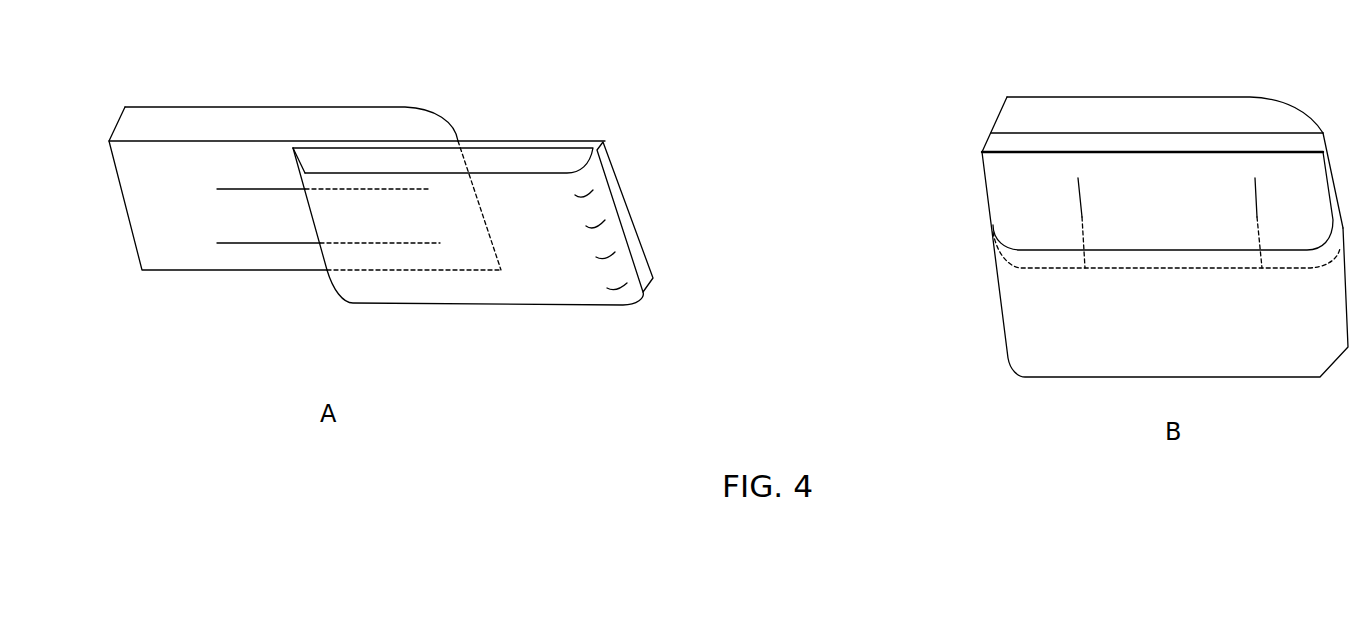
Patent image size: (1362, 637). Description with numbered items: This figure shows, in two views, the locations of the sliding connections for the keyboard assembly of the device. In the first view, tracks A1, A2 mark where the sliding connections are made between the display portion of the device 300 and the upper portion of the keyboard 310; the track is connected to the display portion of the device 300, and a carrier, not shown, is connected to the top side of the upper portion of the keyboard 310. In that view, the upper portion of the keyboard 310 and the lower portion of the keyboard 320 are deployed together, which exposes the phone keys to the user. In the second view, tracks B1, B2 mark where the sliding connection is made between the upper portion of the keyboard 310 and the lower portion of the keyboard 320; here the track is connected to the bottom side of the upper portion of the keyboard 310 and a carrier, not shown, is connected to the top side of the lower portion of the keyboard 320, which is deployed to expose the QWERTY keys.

The display portion of the device 300 is at (197, 124).
The upper portion of the keyboard 310 is at (613, 180).
The lower portion of the keyboard 320 is at (582, 296).
The track A1 is at (215, 176).
The track A2 is at (216, 231).
The track B1 is at (1098, 183).
The track B2 is at (1275, 183).